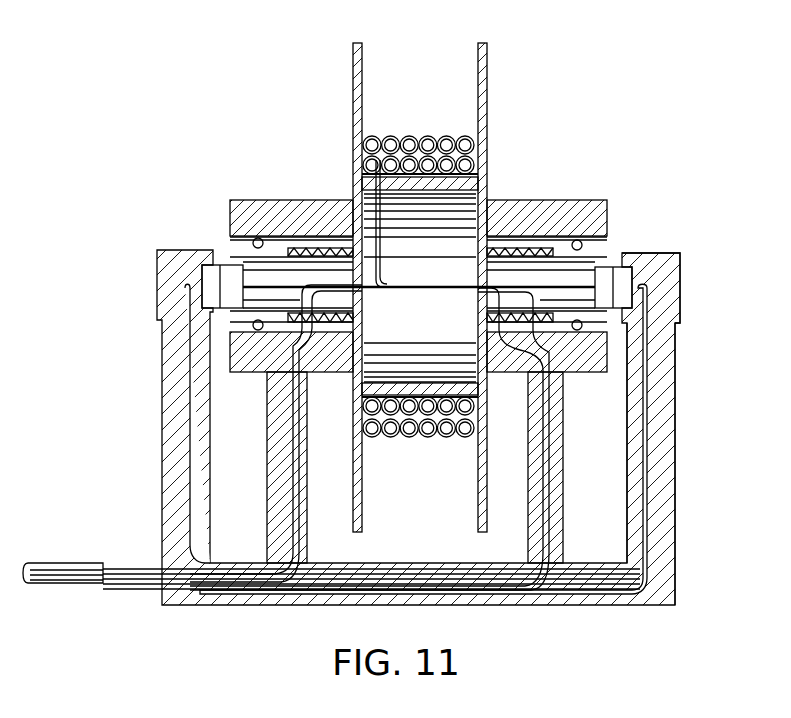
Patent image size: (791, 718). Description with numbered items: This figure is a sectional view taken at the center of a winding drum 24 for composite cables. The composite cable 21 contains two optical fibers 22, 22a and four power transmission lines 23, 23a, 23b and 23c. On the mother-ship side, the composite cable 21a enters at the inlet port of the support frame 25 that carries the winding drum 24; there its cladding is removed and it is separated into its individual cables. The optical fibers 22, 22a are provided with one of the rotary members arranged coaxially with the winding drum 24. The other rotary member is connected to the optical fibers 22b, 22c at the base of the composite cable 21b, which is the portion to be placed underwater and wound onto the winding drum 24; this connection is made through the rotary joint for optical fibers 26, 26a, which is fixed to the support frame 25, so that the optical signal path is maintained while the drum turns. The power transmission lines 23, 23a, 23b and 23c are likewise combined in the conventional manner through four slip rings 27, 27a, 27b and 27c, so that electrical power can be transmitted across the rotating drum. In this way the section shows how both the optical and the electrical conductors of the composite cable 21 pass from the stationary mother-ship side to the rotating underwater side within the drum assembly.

The composite cable 21 is at (76, 560).
The composite cable on the side of the mother ship 21a is at (82, 584).
The composite cable to be placed underwater 21b is at (428, 124).
The optical fiber 22 is at (183, 413).
The optical fiber 22a is at (648, 410).
The optical fiber 22b is at (257, 282).
The optical fiber 22c is at (575, 285).
The power transmission line 23 is at (283, 455).
The power transmission line 23a is at (300, 379).
The power transmission line 23b is at (543, 527).
The power transmission line 23c is at (555, 512).
The winding drum 24 is at (488, 88).
The support frame 25 is at (676, 358).
The rotary joint for optical fibers 26 is at (205, 279).
The rotary joint for optical fibers 26a is at (628, 278).
The slip ring 27 is at (292, 236).
The slip ring 27a is at (322, 246).
The slip ring 27b is at (513, 240).
The slip ring 27c is at (542, 247).